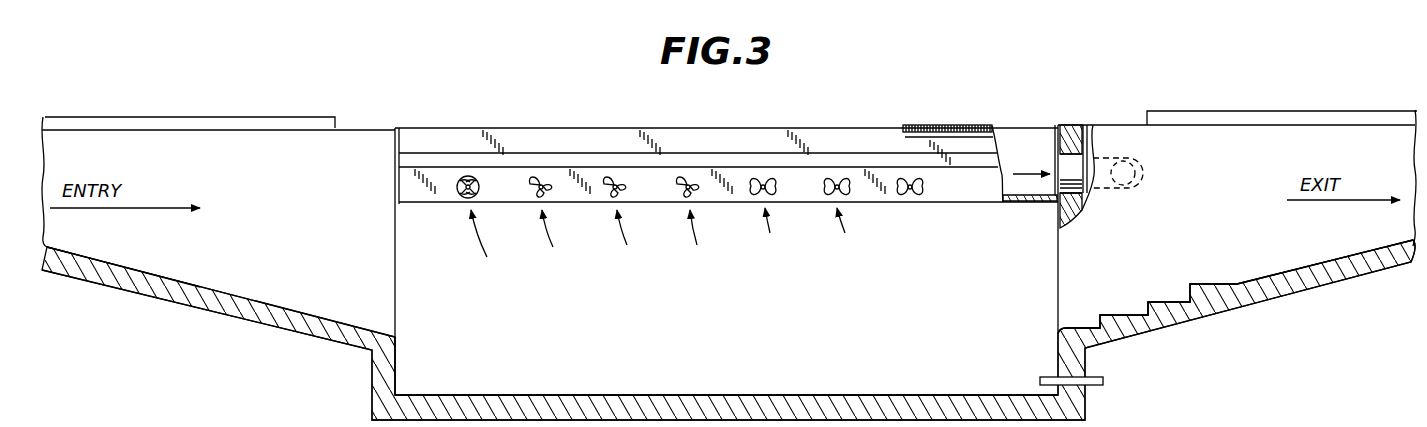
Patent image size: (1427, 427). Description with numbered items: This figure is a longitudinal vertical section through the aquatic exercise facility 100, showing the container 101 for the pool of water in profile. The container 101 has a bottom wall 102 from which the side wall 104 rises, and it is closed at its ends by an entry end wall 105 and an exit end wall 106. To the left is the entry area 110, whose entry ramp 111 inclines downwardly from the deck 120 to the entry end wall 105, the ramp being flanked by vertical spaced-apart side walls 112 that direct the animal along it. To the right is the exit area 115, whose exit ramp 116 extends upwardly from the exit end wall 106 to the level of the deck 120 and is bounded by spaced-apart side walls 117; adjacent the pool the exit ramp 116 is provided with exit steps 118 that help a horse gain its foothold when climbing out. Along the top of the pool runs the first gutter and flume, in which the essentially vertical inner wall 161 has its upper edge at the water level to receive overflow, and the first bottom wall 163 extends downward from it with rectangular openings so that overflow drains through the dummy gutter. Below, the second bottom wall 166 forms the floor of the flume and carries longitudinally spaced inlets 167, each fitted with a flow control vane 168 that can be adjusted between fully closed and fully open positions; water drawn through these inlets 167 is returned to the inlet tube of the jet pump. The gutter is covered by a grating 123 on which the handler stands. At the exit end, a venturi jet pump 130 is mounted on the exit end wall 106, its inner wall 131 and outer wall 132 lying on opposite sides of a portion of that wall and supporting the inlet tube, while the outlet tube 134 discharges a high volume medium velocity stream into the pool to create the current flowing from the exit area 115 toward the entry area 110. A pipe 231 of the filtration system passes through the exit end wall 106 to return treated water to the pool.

The aquatic exercise facility 100 is at (108, 70).
The container 101 is at (303, 338).
The bottom wall 102 is at (570, 397).
The side wall 104 is at (722, 297).
The entry end wall 105 is at (398, 358).
The exit end wall 106 is at (1058, 354).
The entry area 110 is at (191, 155).
The entry ramp 111 is at (208, 290).
The side walls 112 is at (325, 192).
The exit area 115 is at (1207, 155).
The exit ramp 116 is at (1302, 265).
The side walls 117 is at (1228, 231).
The exit steps 118 is at (1197, 284).
The deck 120 is at (268, 116).
The grating 123 is at (925, 126).
The venturi jet pump 130 is at (1102, 143).
The inner wall 131 is at (1062, 132).
The outer wall 132 is at (1086, 135).
The outlet tube 134 is at (1078, 205).
The inner wall 161 is at (550, 135).
The first bottom wall 163 is at (470, 160).
The second bottom wall 166 is at (512, 197).
The inlets 167 is at (447, 205).
The flow control vane 168 is at (633, 204).
The pipe 231 is at (1095, 387).